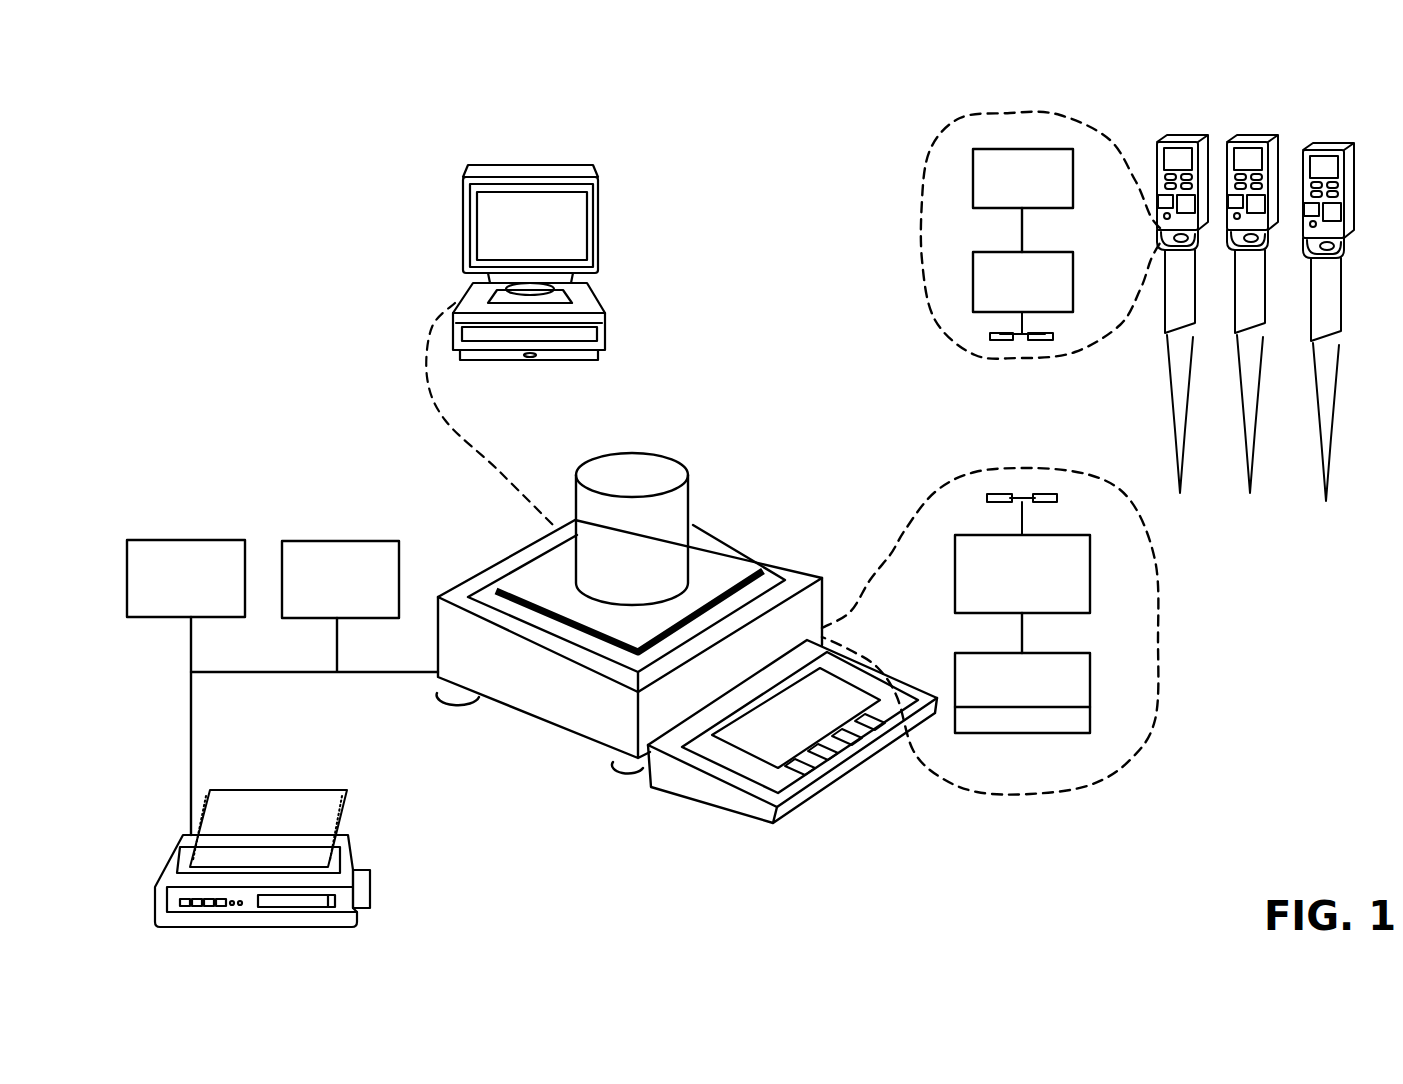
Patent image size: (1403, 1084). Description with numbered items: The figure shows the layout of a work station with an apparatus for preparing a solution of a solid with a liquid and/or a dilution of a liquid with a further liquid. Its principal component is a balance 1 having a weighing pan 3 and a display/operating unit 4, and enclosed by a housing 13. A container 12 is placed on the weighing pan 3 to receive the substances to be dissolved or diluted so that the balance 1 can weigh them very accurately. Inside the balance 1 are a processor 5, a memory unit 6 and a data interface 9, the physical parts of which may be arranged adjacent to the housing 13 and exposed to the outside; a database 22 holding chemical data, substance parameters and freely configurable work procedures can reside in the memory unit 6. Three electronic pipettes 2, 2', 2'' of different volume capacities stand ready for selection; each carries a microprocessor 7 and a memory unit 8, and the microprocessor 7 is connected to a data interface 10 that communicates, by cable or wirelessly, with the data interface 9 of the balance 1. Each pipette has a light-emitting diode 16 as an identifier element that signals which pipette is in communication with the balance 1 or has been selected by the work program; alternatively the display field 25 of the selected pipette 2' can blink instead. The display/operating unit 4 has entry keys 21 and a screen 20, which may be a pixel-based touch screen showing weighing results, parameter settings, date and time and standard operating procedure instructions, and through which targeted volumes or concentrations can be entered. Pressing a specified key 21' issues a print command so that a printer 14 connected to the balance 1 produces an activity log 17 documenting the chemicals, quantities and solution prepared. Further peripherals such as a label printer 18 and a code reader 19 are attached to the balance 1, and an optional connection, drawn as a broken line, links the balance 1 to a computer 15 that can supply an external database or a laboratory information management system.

The balance 1 is at (687, 626).
The electronic pipette 2 is at (1182, 281).
The electronic pipette 2' is at (1252, 281).
The electronic pipette 2'' is at (1331, 289).
The weighing pan 3 is at (710, 562).
The display/operating unit 4 is at (668, 770).
The processor 5 is at (1063, 568).
The memory unit 6 is at (1075, 694).
The microprocessor 7 is at (985, 281).
The memory unit 8 is at (983, 161).
The data interface 9 is at (1018, 494).
The data interface 10 is at (1015, 338).
The container 12 is at (626, 470).
The housing 13 is at (560, 702).
The printer 14 is at (365, 858).
The computer 15 is at (602, 265).
The light-emitting diode 16 is at (1178, 237).
The activity log 17 is at (275, 830).
The label printer 18 is at (314, 606).
The code reader 19 is at (186, 687).
The screen 20 is at (762, 730).
The entry keys 21 is at (860, 761).
The specified key 21' is at (818, 802).
The database 22 is at (1033, 718).
The display field 25 is at (1173, 157).